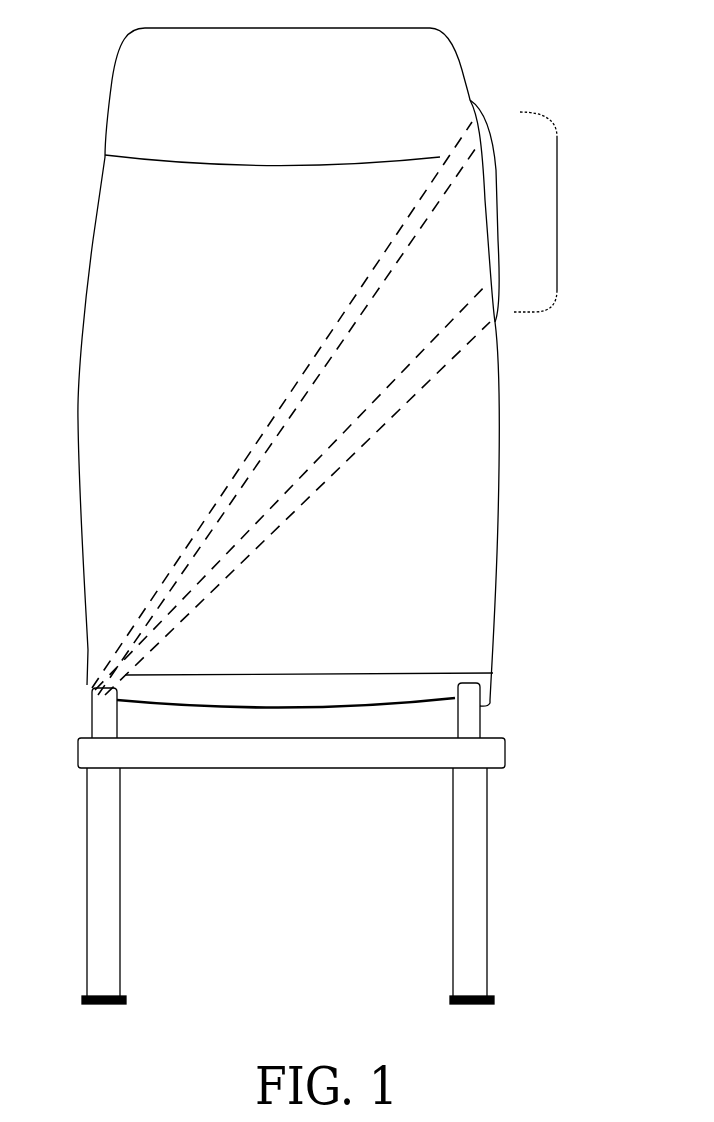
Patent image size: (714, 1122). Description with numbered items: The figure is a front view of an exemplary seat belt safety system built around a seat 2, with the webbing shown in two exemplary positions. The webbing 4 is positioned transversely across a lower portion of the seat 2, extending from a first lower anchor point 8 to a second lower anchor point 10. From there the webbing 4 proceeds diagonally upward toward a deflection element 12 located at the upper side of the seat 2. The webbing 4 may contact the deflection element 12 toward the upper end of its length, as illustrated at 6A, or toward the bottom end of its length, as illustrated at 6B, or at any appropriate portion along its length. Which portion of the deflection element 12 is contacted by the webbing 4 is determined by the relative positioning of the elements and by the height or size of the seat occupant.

The seat 2 is at (122, 60).
The webbing 4 is at (387, 673).
The webbing contact position toward upper end of deflection element 6A is at (300, 368).
The webbing contact position toward bottom end of deflection element 6B is at (392, 423).
The first lower anchor point 8 is at (493, 675).
The second lower anchor point 10 is at (88, 706).
The deflection element 12 is at (558, 207).